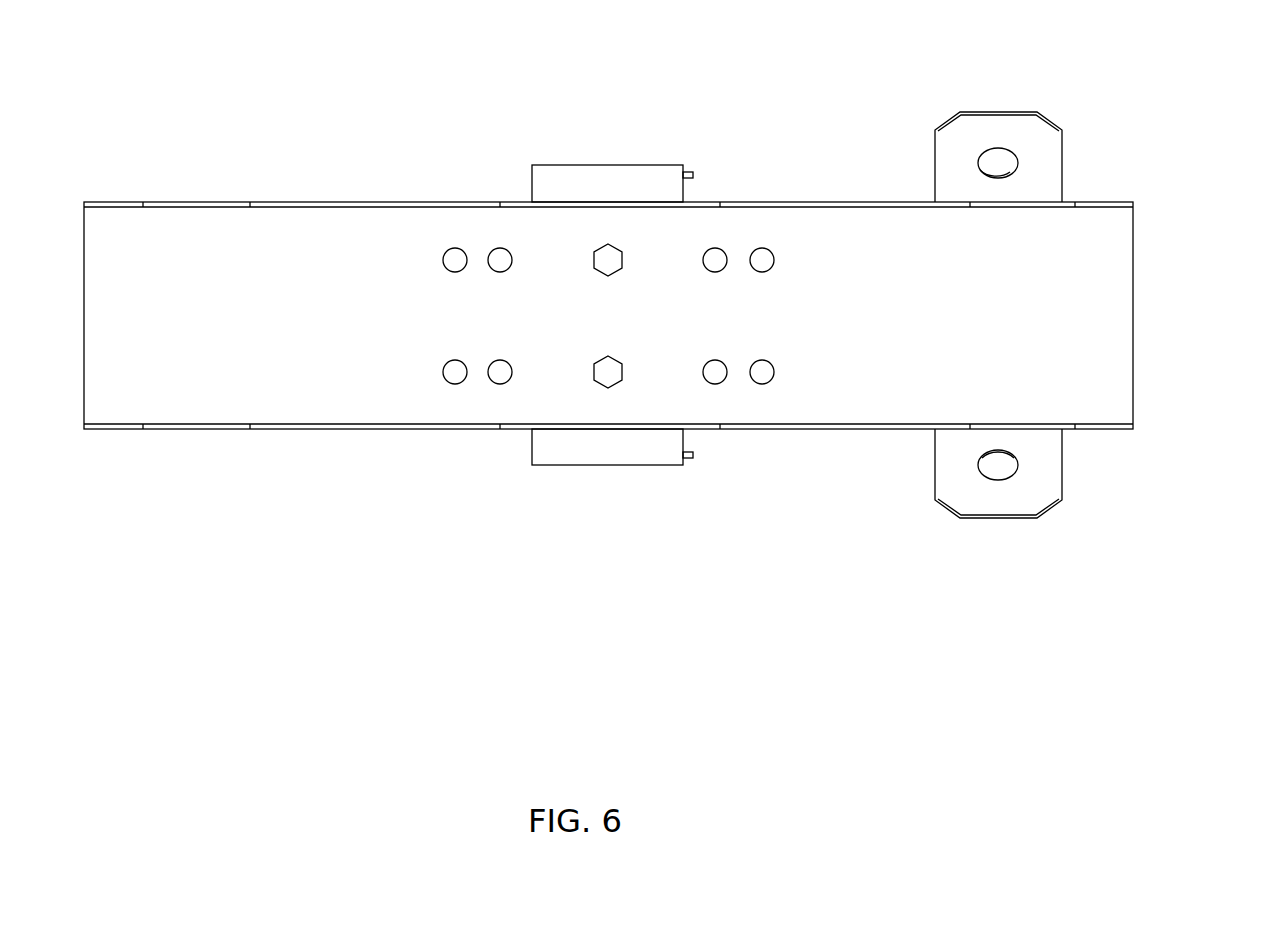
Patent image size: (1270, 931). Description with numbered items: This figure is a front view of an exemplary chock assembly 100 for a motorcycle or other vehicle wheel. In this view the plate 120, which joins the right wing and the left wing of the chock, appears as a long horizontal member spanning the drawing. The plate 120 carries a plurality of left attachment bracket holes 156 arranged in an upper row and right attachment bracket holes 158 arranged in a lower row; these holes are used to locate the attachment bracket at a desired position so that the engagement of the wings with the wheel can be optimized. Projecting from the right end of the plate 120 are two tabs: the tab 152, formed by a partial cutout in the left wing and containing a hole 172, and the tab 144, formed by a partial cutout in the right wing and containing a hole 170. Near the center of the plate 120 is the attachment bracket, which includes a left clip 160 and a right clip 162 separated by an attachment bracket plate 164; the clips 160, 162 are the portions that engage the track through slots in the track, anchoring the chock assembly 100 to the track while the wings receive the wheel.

The chock assembly 100 is at (669, 335).
The plate 120 is at (1133, 313).
The tab 144 is at (1055, 531).
The tab 152 is at (1045, 119).
The left attachment bracket holes 156 is at (443, 254).
The right attachment bracket holes 158 is at (443, 368).
The left clip 160 is at (693, 173).
The right clip 162 is at (688, 458).
The attachment bracket plate 164 is at (578, 165).
The hole 170 is at (1018, 465).
The hole 172 is at (1018, 160).